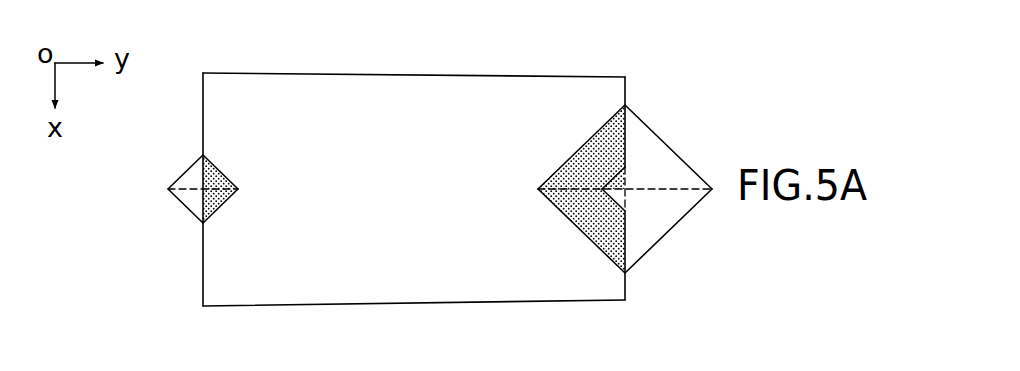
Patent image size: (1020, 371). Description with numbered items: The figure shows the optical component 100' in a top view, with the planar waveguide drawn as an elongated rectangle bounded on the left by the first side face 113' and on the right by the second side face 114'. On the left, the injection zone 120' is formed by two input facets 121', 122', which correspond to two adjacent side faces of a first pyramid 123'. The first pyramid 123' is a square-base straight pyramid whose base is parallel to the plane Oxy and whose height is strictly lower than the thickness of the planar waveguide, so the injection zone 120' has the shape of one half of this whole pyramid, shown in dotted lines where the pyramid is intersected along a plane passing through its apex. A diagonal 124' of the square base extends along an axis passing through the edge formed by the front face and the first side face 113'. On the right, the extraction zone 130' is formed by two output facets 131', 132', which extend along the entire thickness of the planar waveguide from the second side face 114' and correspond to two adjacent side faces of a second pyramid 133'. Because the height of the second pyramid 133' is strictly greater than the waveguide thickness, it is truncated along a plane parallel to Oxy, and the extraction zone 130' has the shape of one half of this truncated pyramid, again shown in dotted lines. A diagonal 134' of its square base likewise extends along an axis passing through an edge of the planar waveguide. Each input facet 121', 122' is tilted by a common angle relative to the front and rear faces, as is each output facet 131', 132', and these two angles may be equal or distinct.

The optical component 100' is at (415, 172).
The first side face 113' is at (152, 205).
The second side face 114' is at (676, 159).
The injection zone 120' is at (189, 193).
The input facet 121' is at (247, 111).
The input facet 122' is at (246, 270).
The first pyramid 123' is at (166, 167).
The diagonal 124' is at (163, 209).
The extraction zone 130' is at (652, 192).
The output facet 131' is at (581, 110).
The output facet 132' is at (581, 270).
The second pyramid 133' is at (670, 128).
The diagonal 134' is at (652, 187).